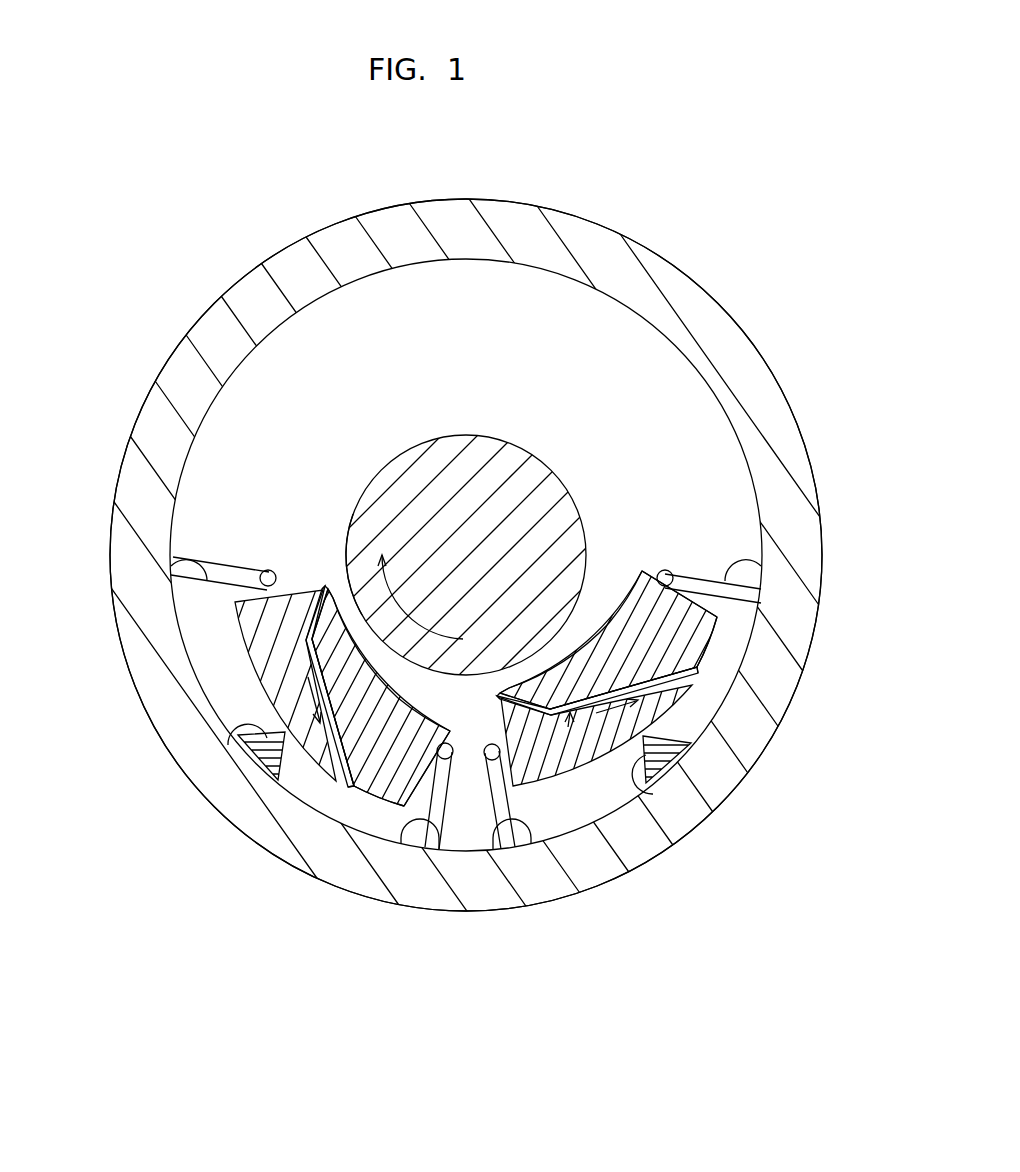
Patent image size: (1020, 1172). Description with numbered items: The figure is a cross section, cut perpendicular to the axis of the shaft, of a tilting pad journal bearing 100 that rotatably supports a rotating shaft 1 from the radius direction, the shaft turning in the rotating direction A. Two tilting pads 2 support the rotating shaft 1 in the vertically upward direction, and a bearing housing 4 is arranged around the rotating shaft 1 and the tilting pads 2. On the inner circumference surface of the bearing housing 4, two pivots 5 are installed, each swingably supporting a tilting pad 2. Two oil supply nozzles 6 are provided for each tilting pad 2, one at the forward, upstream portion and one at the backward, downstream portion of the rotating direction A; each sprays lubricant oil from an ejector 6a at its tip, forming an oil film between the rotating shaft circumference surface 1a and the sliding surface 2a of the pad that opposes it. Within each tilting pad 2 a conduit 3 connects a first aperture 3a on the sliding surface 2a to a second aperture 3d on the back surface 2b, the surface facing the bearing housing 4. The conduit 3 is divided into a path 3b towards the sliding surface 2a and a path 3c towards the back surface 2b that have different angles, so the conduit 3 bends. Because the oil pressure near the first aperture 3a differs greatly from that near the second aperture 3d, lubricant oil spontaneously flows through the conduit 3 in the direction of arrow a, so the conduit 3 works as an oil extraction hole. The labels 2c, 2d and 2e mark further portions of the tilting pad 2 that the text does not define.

The bearing 100 is at (678, 237).
The rotating shaft 1 is at (503, 424).
The rotating shaft circumference surface 1a is at (342, 584).
The tilting pad 2 is at (258, 668).
The sliding surface 2a is at (357, 666).
The back surface 2b is at (323, 783).
The corner portion of cam member 2c is at (331, 590).
The cam surface portion 2d is at (408, 711).
The end face of cam member 2e is at (448, 730).
The conduit 3 is at (301, 645).
The first aperture 3a is at (334, 606).
The path towards the sliding surface 3b is at (325, 587).
The path towards the back surface 3c is at (331, 729).
The second aperture 3d is at (352, 791).
The bearing housing 4 is at (233, 808).
The pivot 5 is at (240, 740).
The oil supply nozzle 6 is at (165, 576).
The ejector 6a is at (671, 571).
The rotating direction A is at (420, 597).
The flow direction of lubricant oil a is at (460, 710).